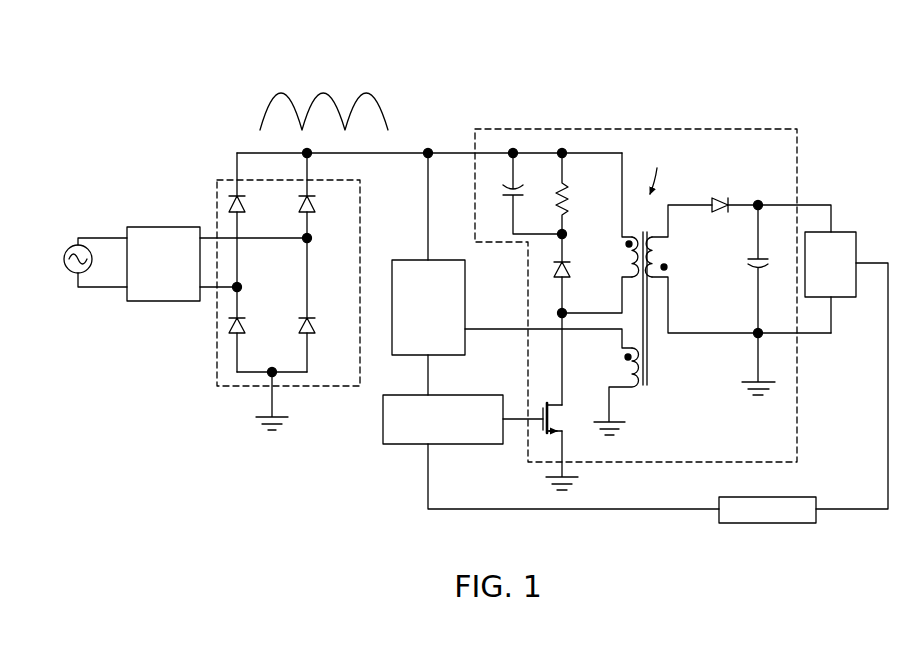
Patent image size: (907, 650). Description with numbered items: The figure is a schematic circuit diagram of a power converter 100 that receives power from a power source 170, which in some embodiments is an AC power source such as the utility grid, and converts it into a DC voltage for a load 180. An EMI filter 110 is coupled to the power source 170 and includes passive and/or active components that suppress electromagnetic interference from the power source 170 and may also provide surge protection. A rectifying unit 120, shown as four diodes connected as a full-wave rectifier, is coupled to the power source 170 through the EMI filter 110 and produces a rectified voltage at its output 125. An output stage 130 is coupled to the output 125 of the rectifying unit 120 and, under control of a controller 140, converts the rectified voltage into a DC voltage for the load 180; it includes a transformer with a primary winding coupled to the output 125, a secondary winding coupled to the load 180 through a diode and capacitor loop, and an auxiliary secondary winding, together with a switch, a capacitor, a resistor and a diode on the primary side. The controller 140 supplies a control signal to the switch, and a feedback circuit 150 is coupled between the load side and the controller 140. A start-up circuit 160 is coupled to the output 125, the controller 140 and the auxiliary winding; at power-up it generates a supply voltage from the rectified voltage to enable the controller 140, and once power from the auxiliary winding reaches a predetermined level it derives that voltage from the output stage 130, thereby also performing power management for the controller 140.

The power converter 100 is at (839, 80).
The EMI filter 110 is at (164, 227).
The rectifying unit 120 is at (221, 179).
The output of the rectifying unit 125 is at (428, 149).
The output stage 130 is at (704, 128).
The controller 140 is at (404, 446).
The feedback circuit 150 is at (770, 525).
The start-up circuit 160 is at (466, 307).
The power source 170 is at (68, 250).
The load 180 is at (840, 231).